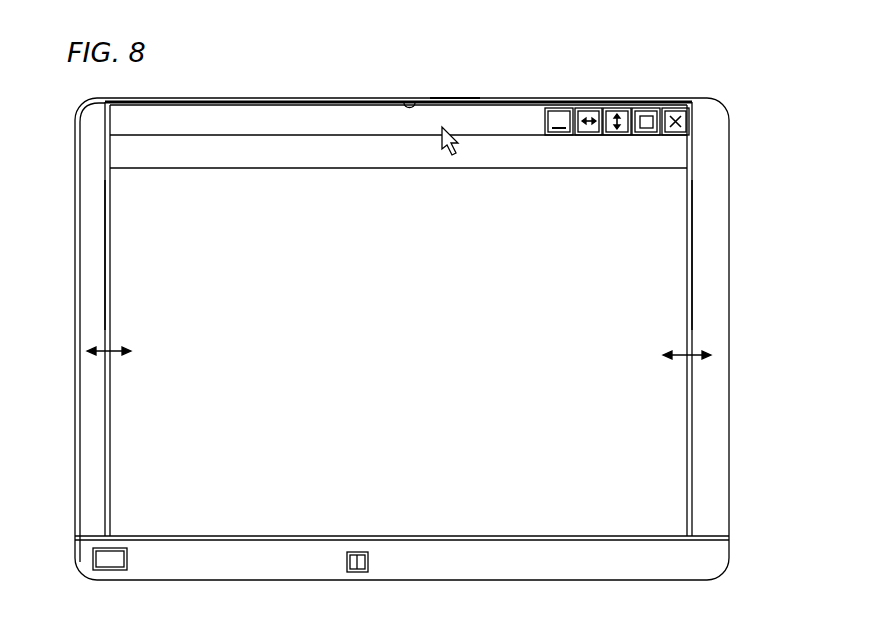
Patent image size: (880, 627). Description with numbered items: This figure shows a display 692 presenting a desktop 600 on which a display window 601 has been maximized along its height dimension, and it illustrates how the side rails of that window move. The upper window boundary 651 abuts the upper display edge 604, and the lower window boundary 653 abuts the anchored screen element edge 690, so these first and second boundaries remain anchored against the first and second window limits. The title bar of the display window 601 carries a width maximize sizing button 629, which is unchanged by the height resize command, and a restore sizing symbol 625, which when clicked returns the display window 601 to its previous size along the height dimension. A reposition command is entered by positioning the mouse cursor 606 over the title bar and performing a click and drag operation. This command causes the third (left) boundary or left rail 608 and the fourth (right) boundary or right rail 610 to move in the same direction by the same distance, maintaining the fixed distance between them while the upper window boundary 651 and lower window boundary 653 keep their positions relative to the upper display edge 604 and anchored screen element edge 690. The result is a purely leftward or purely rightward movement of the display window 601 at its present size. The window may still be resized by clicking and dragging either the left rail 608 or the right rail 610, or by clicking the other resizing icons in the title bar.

The desktop 600 is at (509, 94).
The display window 601 is at (333, 93).
The upper window boundary 651 is at (405, 99).
The upper display edge 604 is at (460, 98).
The width maximize sizing button 629 is at (585, 107).
The restore sizing symbol 625 is at (620, 107).
The mouse cursor 606 is at (454, 153).
The left rail 608 is at (108, 256).
The display 692 is at (92, 325).
The right rail 610 is at (692, 238).
The lower window boundary 653 is at (277, 535).
The anchored screen element edge 690 is at (543, 535).